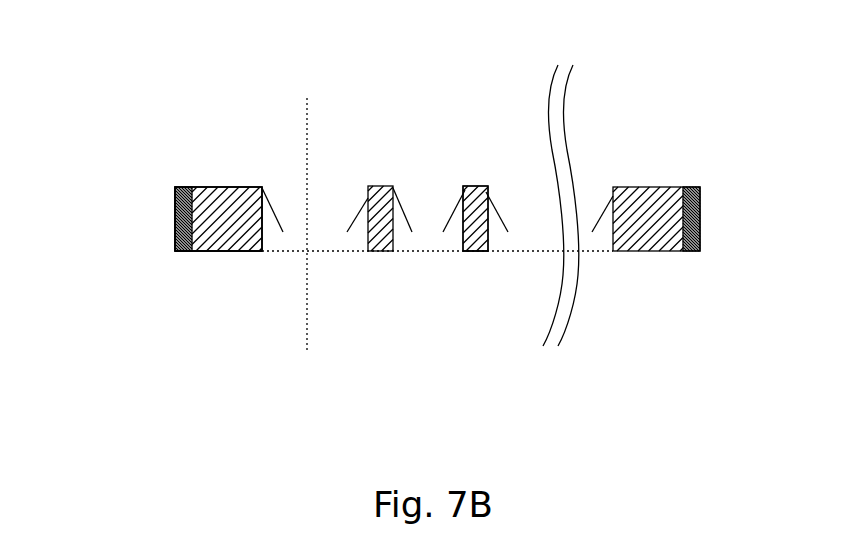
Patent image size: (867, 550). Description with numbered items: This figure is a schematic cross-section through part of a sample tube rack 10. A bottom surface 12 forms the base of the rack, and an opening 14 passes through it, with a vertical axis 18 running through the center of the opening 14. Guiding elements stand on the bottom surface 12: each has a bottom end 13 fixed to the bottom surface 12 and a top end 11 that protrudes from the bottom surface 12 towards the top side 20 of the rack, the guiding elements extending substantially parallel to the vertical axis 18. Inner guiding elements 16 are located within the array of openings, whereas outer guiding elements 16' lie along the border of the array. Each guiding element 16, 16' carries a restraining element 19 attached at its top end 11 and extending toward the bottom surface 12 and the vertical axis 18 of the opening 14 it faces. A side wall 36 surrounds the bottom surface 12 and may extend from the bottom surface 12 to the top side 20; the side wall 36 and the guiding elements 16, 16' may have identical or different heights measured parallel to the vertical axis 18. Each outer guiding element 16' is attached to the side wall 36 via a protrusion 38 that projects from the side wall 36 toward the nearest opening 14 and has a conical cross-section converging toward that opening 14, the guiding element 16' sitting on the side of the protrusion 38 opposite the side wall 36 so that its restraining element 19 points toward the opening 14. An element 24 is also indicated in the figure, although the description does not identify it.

The sample tube rack 10 is at (711, 127).
The top end 11 is at (489, 187).
The bottom surface 12 is at (233, 252).
The bottom end 13 is at (478, 256).
The opening 14 is at (332, 255).
The inner guiding element 16 is at (428, 217).
The outer guiding element 16' is at (431, 170).
The vertical axis 18 is at (308, 112).
The restraining element 19 is at (286, 207).
The top side 20 is at (168, 183).
The gap 24 is at (258, 138).
The side wall 36 is at (175, 225).
The protrusion 38 is at (208, 240).